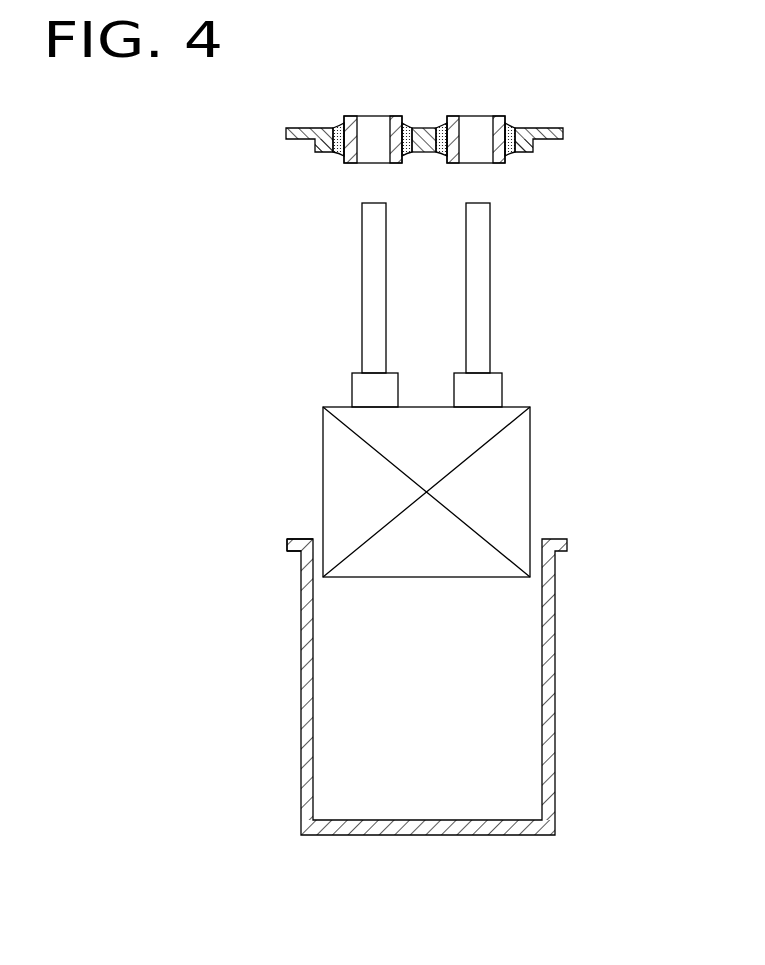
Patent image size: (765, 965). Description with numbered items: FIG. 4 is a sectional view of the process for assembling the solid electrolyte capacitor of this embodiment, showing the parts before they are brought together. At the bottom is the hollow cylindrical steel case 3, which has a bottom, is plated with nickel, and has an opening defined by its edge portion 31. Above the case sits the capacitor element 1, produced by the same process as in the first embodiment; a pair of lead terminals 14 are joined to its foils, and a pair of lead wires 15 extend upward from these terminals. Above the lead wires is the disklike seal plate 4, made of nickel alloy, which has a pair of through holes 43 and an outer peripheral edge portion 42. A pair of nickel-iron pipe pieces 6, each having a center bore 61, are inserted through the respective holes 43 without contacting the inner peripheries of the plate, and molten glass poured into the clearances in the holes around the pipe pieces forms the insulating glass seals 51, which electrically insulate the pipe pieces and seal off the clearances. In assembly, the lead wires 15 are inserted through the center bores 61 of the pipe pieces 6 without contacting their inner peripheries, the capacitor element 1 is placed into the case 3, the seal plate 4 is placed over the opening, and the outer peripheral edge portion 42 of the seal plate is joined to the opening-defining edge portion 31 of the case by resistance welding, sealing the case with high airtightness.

The capacitor element 1 is at (525, 493).
The case 3 is at (555, 691).
The seal plate 4 is at (547, 130).
The pipe piece 6 is at (377, 118).
The lead terminal 14 is at (354, 396).
The lead wire 15 is at (366, 287).
The edge portion 31 is at (302, 536).
The outer peripheral edge portion 42 is at (291, 143).
The through hole 43 is at (335, 127).
The insulating glass seal 51 is at (408, 153).
The center bore 61 is at (357, 130).